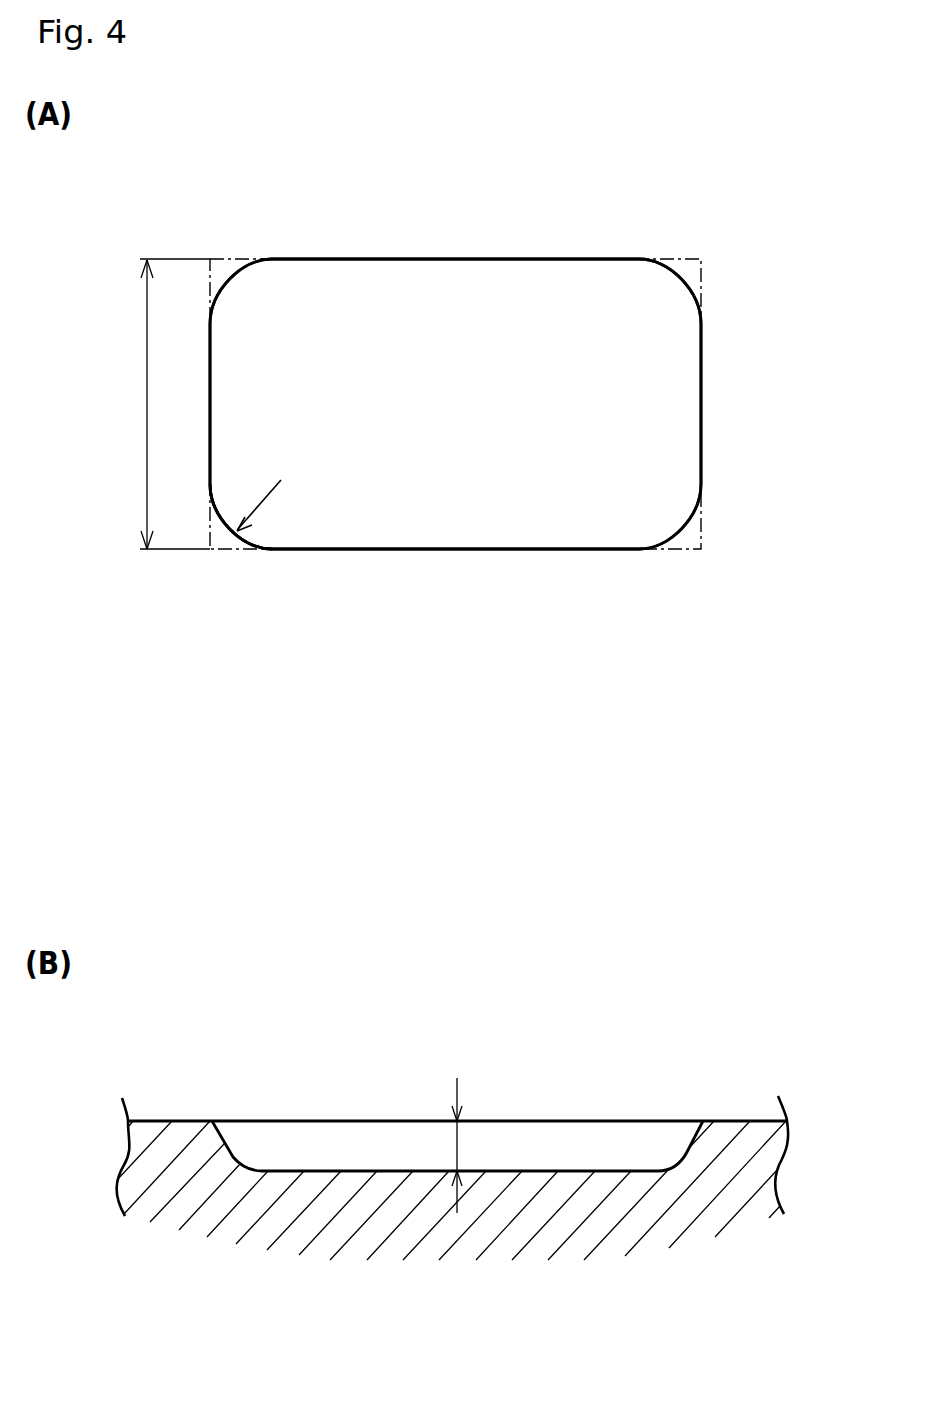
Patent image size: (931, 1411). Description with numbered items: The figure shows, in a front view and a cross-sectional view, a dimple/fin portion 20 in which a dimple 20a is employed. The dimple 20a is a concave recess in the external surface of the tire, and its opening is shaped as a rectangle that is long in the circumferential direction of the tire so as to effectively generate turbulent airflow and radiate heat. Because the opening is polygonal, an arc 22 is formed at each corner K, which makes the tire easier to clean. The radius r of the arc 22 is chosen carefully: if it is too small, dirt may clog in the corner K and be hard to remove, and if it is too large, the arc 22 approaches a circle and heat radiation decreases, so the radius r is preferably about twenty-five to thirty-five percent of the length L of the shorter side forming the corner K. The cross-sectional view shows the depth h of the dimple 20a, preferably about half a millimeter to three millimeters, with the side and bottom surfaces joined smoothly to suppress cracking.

The dimple 20a is at (393, 259).
The dimple/fin portion 20 is at (455, 404).
The arc 22 is at (237, 538).
The corner K is at (705, 255).
The length of the shorter side L is at (148, 405).
The radius of arc r is at (263, 500).
The depth h is at (458, 1143).